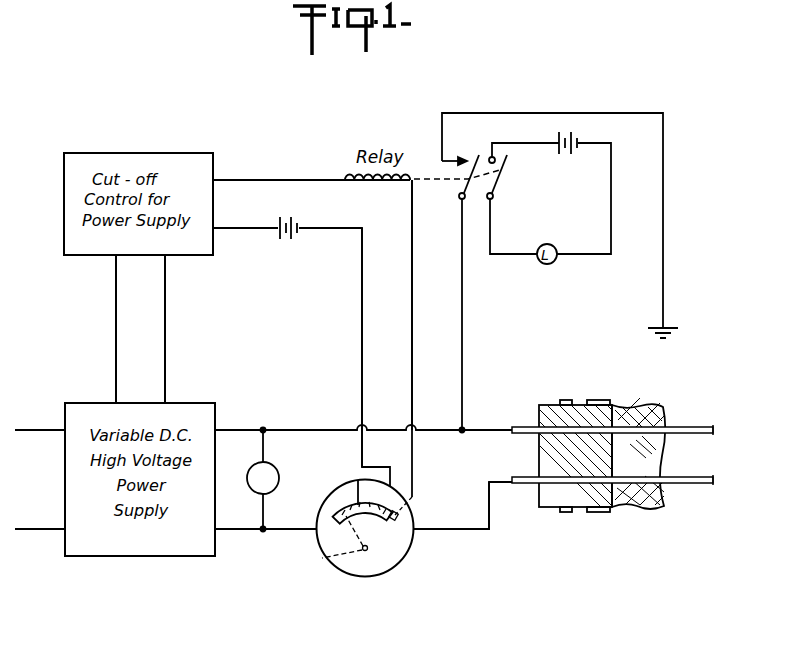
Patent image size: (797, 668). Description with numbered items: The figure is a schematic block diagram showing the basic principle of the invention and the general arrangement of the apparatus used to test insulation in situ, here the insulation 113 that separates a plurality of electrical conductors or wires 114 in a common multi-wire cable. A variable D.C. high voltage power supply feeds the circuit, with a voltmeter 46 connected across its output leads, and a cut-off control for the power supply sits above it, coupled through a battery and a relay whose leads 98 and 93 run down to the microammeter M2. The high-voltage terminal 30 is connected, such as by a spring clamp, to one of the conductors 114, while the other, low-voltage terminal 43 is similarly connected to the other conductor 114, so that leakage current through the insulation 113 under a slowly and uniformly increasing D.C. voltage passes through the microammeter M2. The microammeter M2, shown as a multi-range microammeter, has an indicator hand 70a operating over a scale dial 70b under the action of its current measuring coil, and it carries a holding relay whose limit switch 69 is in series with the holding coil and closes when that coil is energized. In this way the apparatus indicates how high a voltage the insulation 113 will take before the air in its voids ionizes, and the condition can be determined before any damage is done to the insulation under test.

The terminal 30 is at (475, 428).
The terminal 43 is at (489, 531).
The voltmeter 46 is at (277, 469).
The limit switch 69 is at (399, 518).
The indicator hand 70a is at (322, 558).
The scale dial 70b is at (358, 490).
The relay lead 93 is at (413, 323).
The relay battery lead 98 is at (361, 303).
The insulation 113 is at (591, 499).
The conductors 114 is at (522, 425).
The microammeter M2 is at (408, 545).